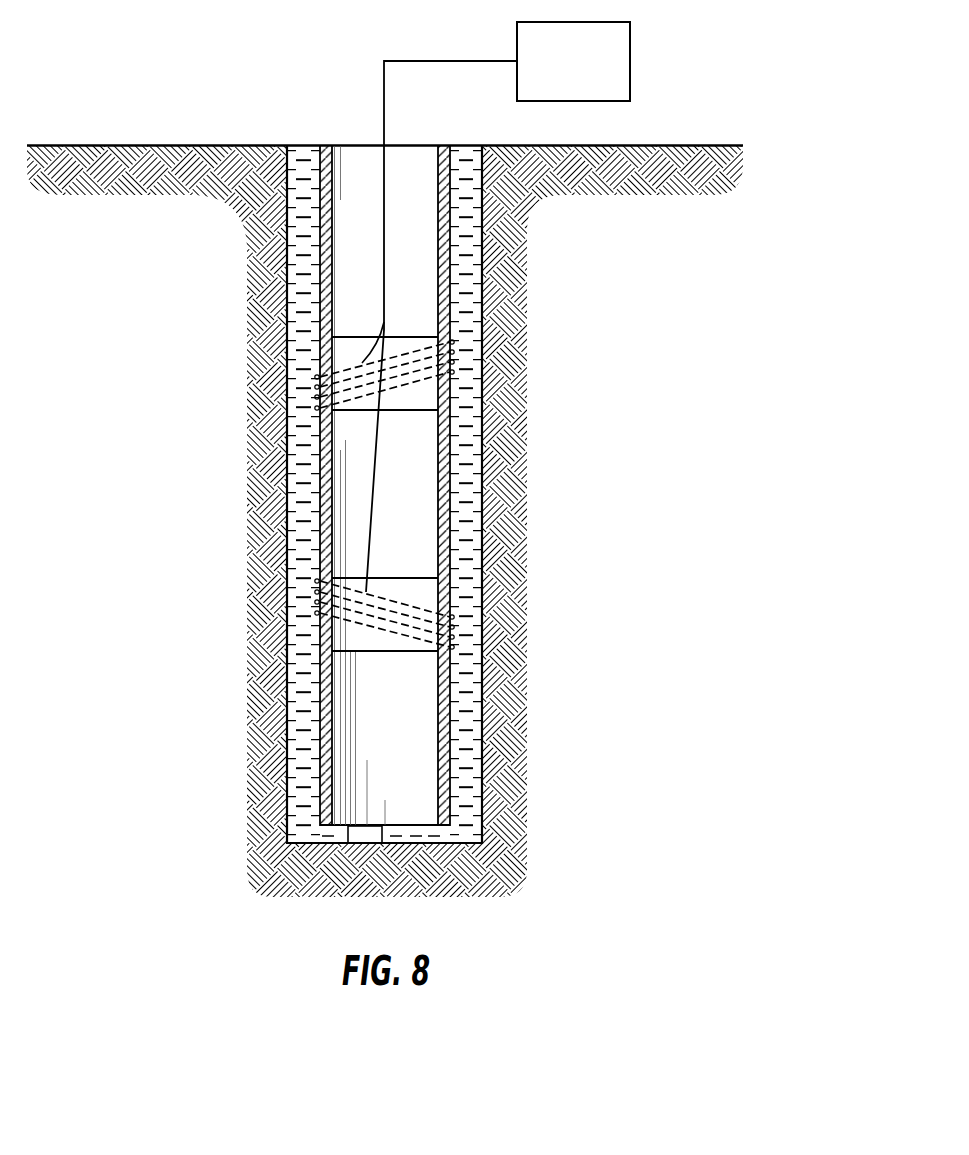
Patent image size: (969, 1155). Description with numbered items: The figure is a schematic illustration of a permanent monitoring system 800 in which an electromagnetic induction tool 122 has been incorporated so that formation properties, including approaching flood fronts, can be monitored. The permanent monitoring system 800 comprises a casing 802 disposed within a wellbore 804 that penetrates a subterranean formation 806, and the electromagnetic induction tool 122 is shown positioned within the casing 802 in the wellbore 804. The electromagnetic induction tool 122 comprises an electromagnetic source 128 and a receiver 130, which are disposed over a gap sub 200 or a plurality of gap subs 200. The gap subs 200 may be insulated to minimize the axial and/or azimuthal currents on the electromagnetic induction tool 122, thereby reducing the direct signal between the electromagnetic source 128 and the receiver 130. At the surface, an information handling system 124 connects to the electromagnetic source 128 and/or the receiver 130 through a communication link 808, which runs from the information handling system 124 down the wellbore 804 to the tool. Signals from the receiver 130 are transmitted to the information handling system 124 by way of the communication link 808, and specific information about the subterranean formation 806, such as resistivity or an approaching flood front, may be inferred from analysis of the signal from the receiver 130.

The electromagnetic induction tool 122 is at (230, 342).
The information handling system 124 is at (594, 78).
The electromagnetic source 128 is at (454, 362).
The receiver 130 is at (454, 628).
The gap sub 200 is at (420, 399).
The permanent monitoring system 800 is at (530, 249).
The casing 802 is at (319, 174).
The wellbore 804 is at (482, 282).
The subterranean formation 806 is at (540, 188).
The communication link 808 is at (452, 60).